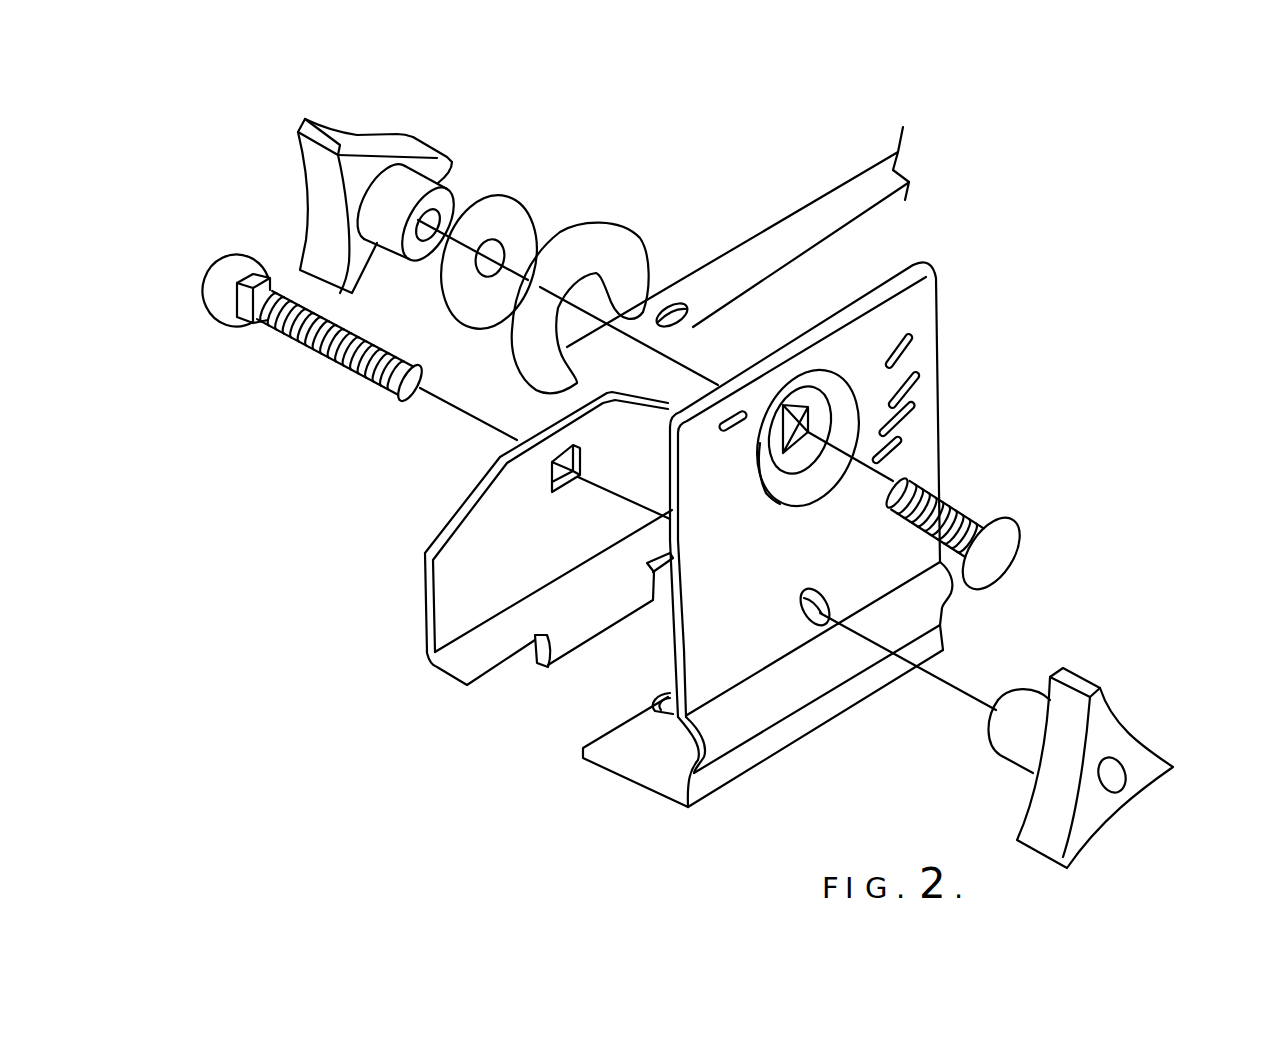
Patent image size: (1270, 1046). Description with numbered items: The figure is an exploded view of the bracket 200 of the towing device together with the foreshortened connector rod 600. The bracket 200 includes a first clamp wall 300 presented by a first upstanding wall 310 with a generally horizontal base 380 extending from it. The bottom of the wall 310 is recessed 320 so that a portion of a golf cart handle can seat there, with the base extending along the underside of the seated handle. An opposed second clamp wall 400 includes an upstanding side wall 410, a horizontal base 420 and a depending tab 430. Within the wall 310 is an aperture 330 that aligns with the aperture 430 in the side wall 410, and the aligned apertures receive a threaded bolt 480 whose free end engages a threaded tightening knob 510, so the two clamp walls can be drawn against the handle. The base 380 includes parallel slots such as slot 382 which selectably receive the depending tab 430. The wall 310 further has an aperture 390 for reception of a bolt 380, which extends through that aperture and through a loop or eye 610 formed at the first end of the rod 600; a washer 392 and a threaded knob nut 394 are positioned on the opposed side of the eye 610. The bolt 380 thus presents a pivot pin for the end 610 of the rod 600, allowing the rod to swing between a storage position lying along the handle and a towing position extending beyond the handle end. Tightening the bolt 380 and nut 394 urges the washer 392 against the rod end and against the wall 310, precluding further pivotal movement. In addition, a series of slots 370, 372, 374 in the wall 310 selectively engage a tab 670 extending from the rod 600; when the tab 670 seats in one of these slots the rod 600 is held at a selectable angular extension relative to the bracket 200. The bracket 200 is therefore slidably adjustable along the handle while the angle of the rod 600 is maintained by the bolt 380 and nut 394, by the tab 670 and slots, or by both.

The bracket 200 is at (998, 342).
The first clamp wall 300 is at (970, 446).
The first upstanding wall 310 is at (927, 420).
The recess 320 is at (943, 603).
The aperture 330 is at (822, 592).
The slot 370 is at (893, 345).
The slot 372 is at (922, 365).
The slot 374 is at (915, 392).
The bolt / horizontal base 380 is at (625, 783).
The slot 382 is at (656, 705).
The aperture 390 is at (766, 465).
The washer 392 is at (493, 193).
The threaded knob nut 394 is at (335, 102).
The second clamp wall 400 is at (419, 515).
The upstanding side wall 410 is at (425, 572).
The horizontal base 420 is at (463, 657).
The depending tab / aperture 430 is at (563, 492).
The threaded bolt 480 is at (378, 380).
The threaded tightening knob 510 is at (1143, 790).
The rod 600 is at (790, 208).
The loop/eye 610 is at (600, 218).
The tab 670 is at (688, 317).